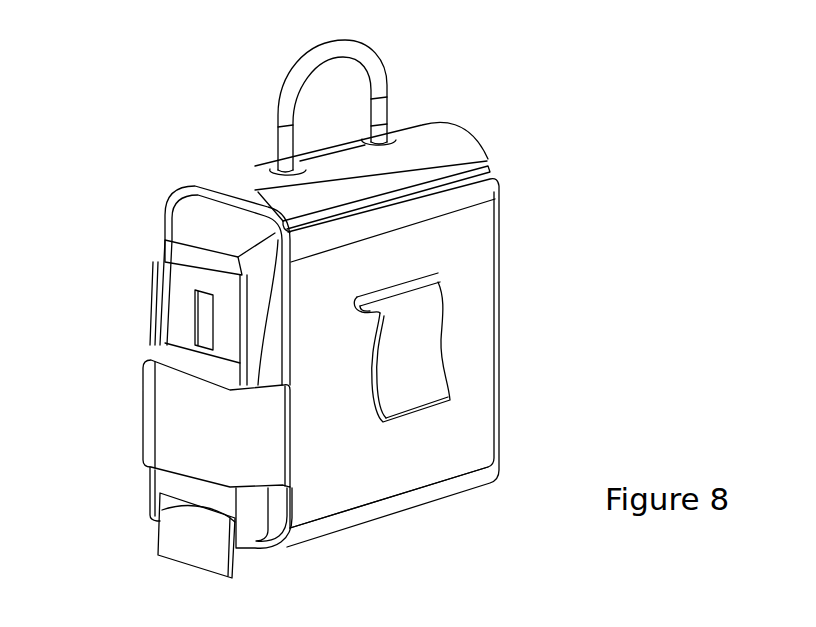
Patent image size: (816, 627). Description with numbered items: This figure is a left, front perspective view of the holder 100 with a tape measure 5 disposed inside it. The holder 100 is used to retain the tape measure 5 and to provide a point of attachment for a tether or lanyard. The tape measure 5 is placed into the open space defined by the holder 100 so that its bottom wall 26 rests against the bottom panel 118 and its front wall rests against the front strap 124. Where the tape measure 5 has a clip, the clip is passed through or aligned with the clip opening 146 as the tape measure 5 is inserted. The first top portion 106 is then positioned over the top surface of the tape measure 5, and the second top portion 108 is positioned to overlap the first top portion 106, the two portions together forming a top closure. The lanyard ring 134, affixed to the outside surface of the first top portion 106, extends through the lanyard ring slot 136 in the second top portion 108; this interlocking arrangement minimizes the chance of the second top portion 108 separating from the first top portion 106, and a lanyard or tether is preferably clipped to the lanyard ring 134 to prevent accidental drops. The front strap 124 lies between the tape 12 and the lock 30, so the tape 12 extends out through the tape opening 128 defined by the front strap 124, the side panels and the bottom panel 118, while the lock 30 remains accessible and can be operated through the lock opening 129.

The holder 100 is at (172, 153).
The lanyard ring 134 is at (380, 66).
The lanyard ring slot 136 is at (387, 140).
The second top portion 108 is at (433, 157).
The first top portion 106 is at (460, 193).
The clip opening 146 is at (438, 274).
The tape 12 is at (423, 383).
The lock 30 is at (188, 246).
The tape measure 5 is at (153, 316).
The front strap 124 is at (177, 422).
The tape opening 128 is at (287, 503).
The bottom wall 26 is at (254, 551).
The lock opening 129 is at (290, 350).
The bottom panel 118 is at (448, 498).